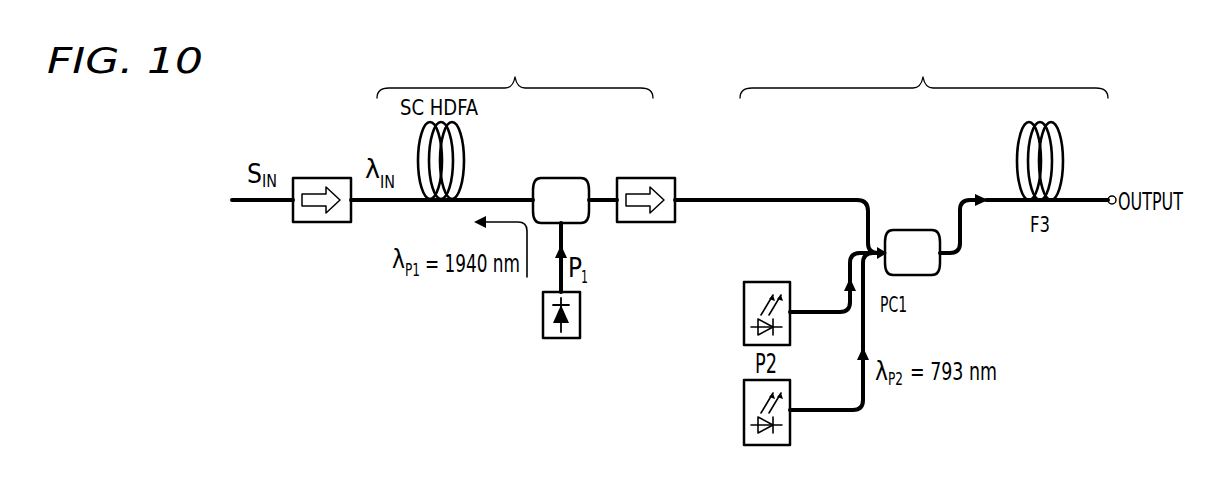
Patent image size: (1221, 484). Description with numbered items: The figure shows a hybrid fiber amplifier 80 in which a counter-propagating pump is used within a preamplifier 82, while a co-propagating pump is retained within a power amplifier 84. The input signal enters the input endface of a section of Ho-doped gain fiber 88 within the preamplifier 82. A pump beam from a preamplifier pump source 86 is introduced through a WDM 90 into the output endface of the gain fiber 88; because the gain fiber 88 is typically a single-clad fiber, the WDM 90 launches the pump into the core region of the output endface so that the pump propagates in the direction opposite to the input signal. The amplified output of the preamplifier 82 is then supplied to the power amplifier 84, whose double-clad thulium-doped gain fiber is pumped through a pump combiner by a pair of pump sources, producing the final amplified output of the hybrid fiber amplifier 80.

The hybrid fiber amplifier 80 is at (135, 129).
The preamplifier 82 is at (525, 65).
The power amplifier 84 is at (935, 65).
The preamplifier pump source 86 is at (543, 312).
The Ho-doped gain fiber 88 is at (463, 142).
The WDM 90 is at (561, 178).